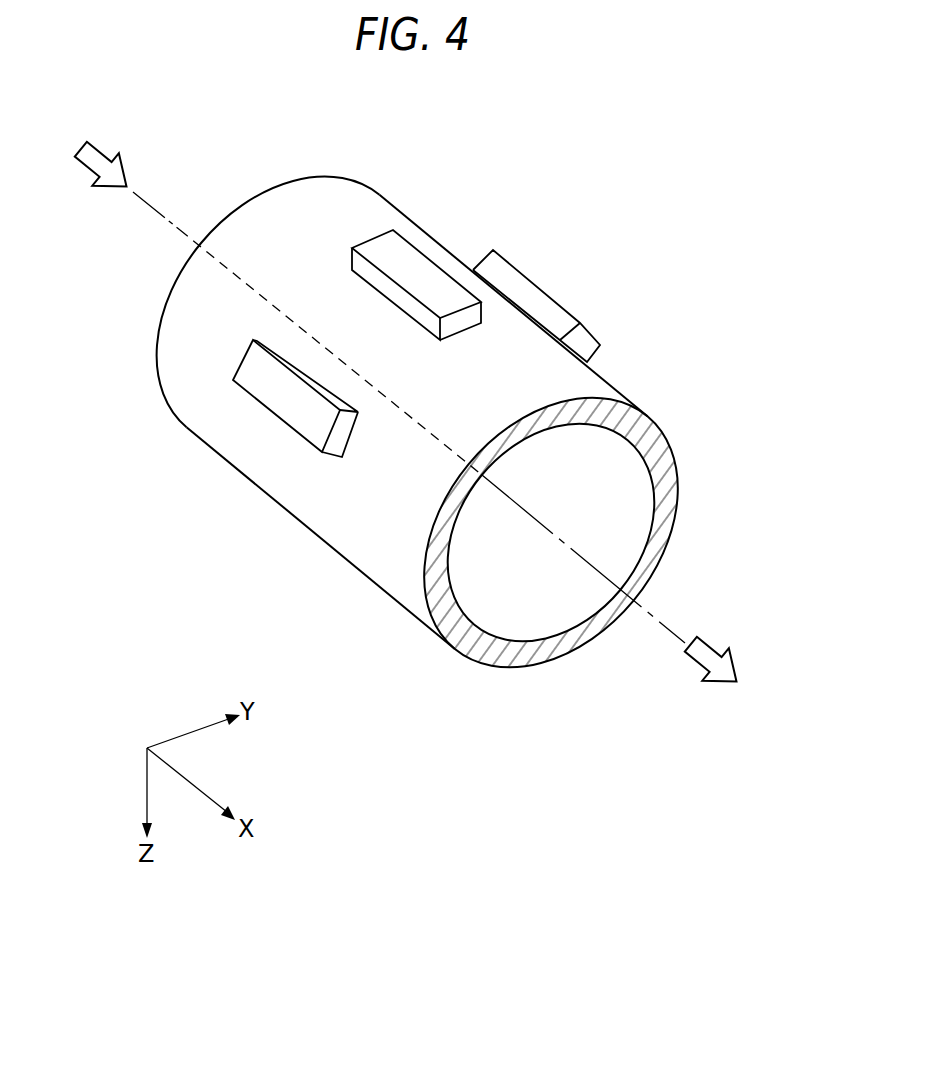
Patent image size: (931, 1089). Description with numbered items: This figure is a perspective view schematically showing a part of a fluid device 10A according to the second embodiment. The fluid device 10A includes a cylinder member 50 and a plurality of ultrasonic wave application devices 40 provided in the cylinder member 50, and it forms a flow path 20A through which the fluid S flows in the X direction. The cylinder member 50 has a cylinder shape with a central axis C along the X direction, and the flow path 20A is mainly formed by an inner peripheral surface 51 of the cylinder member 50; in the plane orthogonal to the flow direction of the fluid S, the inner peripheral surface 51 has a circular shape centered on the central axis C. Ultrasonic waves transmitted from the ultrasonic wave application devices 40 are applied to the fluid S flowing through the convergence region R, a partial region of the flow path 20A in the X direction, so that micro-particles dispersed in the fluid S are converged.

The fluid device 10A is at (456, 408).
The ultrasonic wave application device 40 is at (413, 253).
The cylinder member 50 is at (605, 380).
The inner peripheral surface 51 is at (630, 483).
The flow path 20A is at (527, 601).
The central axis C is at (670, 623).
The fluid S is at (412, 415).
The convergence region R is at (283, 575).